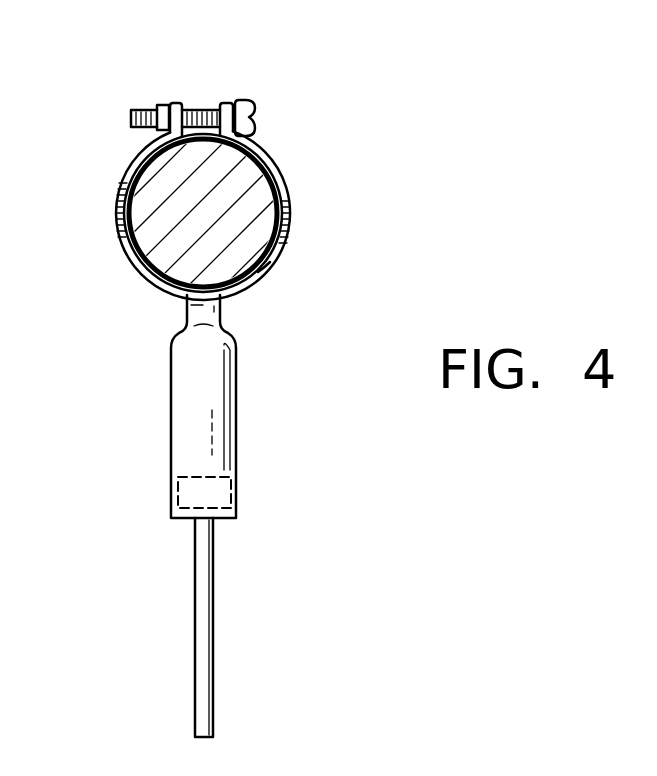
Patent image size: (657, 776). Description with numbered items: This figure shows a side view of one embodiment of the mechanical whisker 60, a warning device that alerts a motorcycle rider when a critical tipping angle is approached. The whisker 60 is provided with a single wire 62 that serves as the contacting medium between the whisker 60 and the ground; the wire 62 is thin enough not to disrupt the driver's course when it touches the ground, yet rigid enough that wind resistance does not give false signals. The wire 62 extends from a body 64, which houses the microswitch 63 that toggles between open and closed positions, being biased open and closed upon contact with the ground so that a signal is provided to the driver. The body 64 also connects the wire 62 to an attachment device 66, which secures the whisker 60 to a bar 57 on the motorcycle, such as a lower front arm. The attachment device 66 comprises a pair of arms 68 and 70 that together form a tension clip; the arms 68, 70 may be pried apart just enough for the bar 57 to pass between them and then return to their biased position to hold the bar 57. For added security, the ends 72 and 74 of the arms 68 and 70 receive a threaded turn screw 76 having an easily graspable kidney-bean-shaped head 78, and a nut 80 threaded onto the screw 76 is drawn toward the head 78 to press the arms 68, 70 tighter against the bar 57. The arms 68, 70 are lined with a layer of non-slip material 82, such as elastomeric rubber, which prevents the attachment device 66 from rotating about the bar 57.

The bar 57 is at (245, 180).
The whisker 60 is at (152, 389).
The wire 62 is at (195, 625).
The switch 63 is at (233, 493).
The body 64 is at (215, 435).
The attachment device 66 is at (298, 221).
The arm 68 is at (280, 254).
The arm 70 is at (117, 213).
The end of arm 72 is at (231, 103).
The end of arm 74 is at (178, 103).
The threaded turn screw 76 is at (134, 110).
The head 78 is at (255, 108).
The nut 80 is at (160, 105).
The layer of non-slip material 82 is at (284, 180).